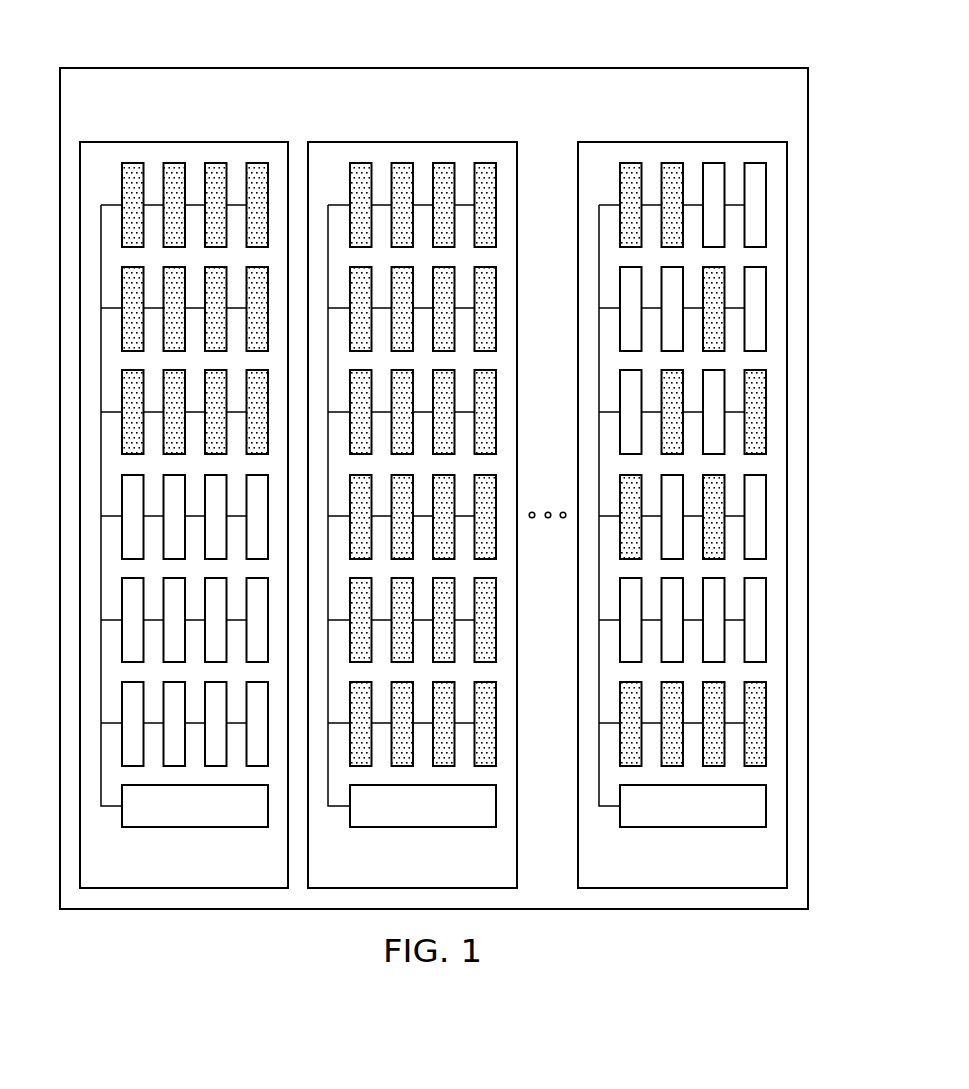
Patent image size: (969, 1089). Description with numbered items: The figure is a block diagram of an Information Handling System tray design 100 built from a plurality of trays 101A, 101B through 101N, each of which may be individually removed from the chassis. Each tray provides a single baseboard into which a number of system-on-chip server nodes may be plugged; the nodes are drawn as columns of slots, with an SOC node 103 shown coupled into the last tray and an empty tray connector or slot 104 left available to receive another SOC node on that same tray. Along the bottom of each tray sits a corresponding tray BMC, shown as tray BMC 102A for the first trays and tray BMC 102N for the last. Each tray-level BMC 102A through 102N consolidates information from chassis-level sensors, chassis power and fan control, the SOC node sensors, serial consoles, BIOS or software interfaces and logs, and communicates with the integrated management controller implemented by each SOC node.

The tray design 100 is at (266, 67).
The tray 101A is at (131, 139).
The tray 101B is at (359, 139).
The tray 101N is at (725, 484).
The tray BMC 102A is at (197, 828).
The tray BMC 102N is at (692, 828).
The SOC node 103 is at (767, 392).
The empty tray connector or slot 104 is at (767, 288).